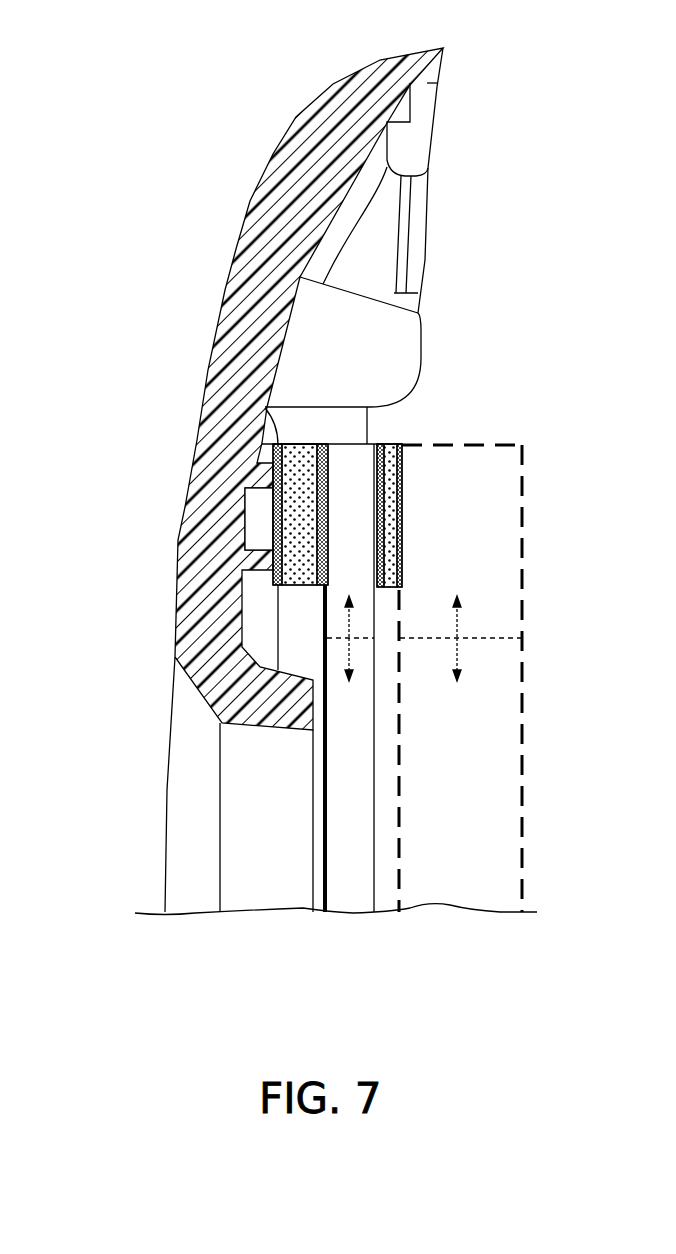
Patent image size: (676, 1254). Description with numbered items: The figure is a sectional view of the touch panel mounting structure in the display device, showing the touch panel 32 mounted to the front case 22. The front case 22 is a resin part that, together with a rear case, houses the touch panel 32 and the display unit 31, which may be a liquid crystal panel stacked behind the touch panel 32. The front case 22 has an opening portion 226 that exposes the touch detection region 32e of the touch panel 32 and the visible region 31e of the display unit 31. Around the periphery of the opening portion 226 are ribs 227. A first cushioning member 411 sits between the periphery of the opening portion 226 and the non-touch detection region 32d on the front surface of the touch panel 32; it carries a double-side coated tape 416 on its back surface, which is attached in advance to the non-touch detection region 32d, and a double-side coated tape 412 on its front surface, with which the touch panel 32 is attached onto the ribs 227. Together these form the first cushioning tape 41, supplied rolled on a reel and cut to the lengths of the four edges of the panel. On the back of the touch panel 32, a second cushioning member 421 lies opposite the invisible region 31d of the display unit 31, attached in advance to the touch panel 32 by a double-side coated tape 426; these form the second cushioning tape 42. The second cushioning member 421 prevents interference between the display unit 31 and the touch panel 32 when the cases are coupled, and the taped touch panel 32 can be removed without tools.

The front case 22 is at (250, 272).
The first cushioning tape 41 is at (190, 453).
The double-side coated tape 416 is at (320, 445).
The first cushioning member 411 is at (272, 425).
The double-side coated tape 412 is at (273, 441).
The ribs 227 is at (263, 510).
The opening portion 226 is at (246, 804).
The second cushioning tape 42 is at (460, 478).
The double-side coated tape 426 is at (383, 443).
The second cushioning member 421 is at (393, 443).
The touch panel 32 is at (350, 888).
The display unit 31 is at (470, 890).
The non-touch detection region 32d is at (352, 604).
The touch detection region 32e is at (352, 675).
The invisible region 31d is at (457, 604).
The visible region 31e is at (457, 675).